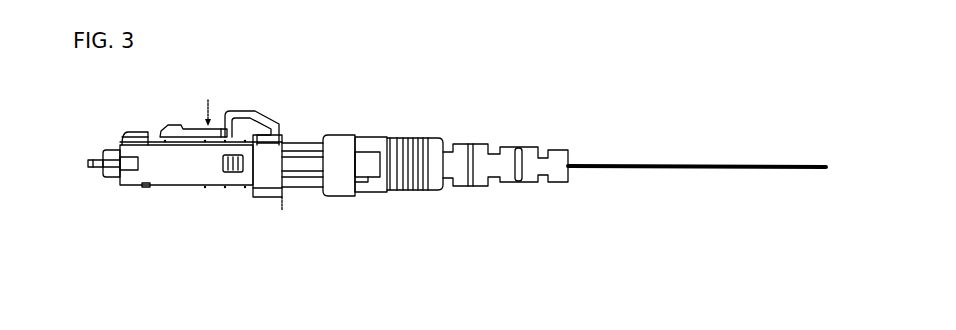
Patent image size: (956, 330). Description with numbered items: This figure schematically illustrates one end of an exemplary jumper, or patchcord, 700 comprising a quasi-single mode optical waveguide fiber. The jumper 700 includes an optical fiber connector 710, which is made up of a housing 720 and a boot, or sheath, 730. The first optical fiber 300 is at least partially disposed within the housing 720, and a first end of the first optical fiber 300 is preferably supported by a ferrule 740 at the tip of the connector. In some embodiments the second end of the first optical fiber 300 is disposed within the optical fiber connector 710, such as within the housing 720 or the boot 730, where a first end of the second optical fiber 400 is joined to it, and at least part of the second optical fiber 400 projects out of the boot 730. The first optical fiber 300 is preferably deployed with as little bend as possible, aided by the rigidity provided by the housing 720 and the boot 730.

The jumper 700 is at (616, 103).
The first optical fiber 300 is at (97, 167).
The ferrule 740 is at (110, 145).
The housing 720 is at (163, 167).
The optical fiber connector 710 is at (368, 182).
The boot 730 is at (470, 137).
The second optical fiber 400 is at (767, 161).